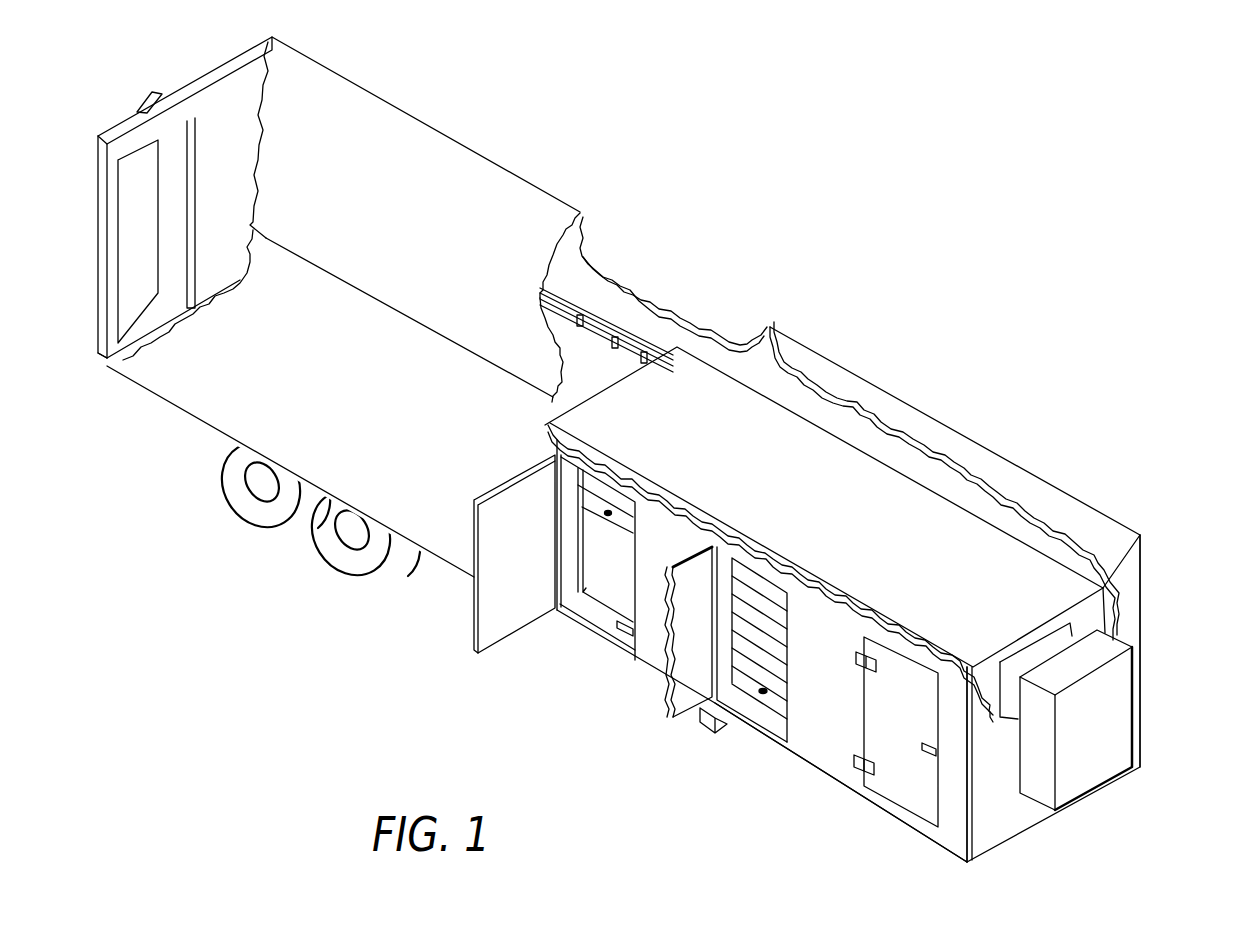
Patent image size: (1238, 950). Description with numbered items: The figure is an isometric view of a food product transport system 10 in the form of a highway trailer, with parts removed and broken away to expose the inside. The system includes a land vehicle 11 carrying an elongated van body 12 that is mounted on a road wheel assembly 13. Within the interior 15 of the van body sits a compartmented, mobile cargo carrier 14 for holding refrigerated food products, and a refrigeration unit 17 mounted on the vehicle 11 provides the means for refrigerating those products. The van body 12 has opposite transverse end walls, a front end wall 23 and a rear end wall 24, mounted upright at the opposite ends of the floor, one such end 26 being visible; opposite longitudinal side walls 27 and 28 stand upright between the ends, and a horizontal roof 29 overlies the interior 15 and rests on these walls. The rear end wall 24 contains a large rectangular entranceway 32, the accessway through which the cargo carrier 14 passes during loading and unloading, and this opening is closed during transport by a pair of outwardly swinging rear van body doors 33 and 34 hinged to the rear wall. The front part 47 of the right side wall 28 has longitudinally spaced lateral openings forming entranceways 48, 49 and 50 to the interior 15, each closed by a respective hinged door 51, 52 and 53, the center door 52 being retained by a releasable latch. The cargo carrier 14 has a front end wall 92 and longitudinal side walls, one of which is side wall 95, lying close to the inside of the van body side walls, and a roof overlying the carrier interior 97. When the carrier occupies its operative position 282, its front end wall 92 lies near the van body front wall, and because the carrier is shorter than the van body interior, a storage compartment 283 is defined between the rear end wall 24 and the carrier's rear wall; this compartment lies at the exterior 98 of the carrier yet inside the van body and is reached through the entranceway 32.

The food product transport system 10 is at (1128, 407).
The land vehicle 11 is at (1143, 733).
The van body 12 is at (888, 388).
The road wheel assembly 13 is at (330, 558).
The cargo carrier 14 is at (608, 387).
The interior 15 is at (573, 273).
The refrigeration unit 17 is at (1133, 667).
The front end wall 23 is at (1130, 598).
The rear end wall 24 is at (222, 85).
The end of floor 26 is at (107, 363).
The side wall 27 is at (1090, 505).
The right side wall 28 is at (175, 385).
The roof 29 is at (463, 163).
The entranceway 32 is at (172, 132).
The rear van body door 33 is at (140, 101).
The rear van body door 34 is at (252, 110).
The front part of side wall 47 is at (876, 807).
The entranceway 48 is at (934, 772).
The entranceway 49 is at (783, 633).
The entranceway 50 is at (637, 568).
The door 51 is at (864, 718).
The center door 52 is at (705, 550).
The door 53 is at (498, 487).
The front end wall of carrier 92 is at (1017, 671).
The side wall of carrier 95 is at (638, 482).
The interior of carrier 97 is at (592, 560).
The exterior of cargo carrier 98 is at (568, 498).
The operative position 282 is at (915, 480).
The storage compartment 283 is at (620, 363).